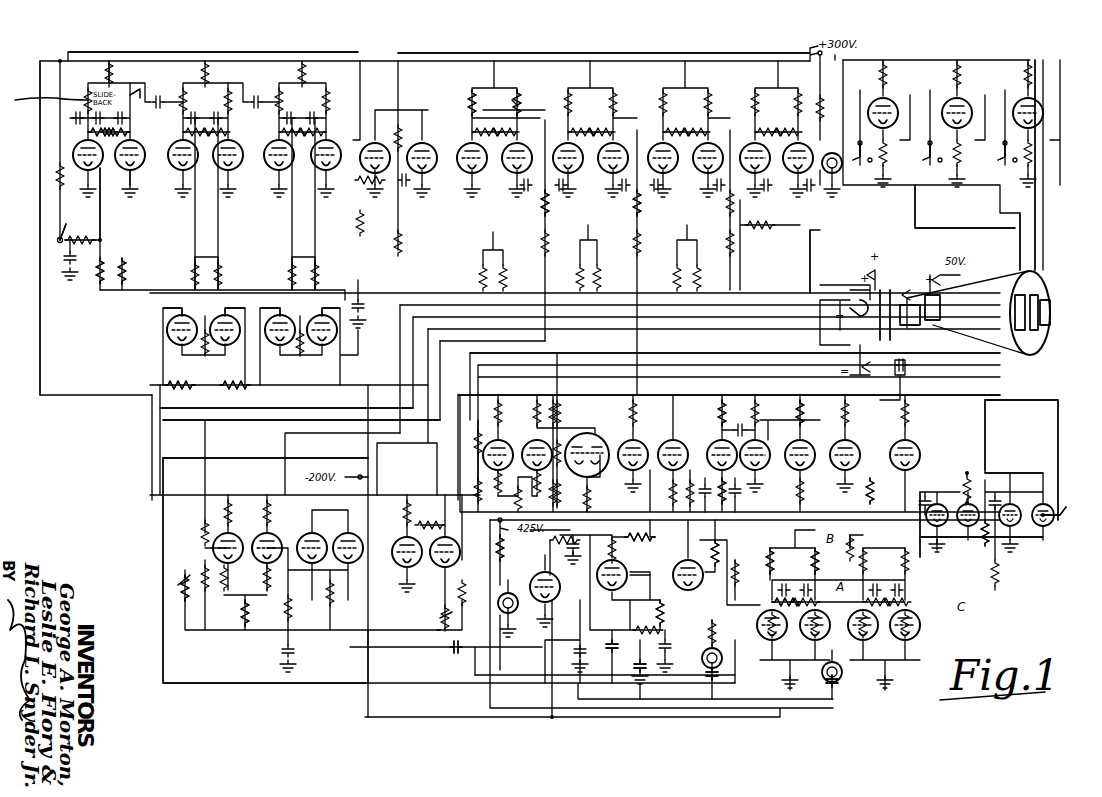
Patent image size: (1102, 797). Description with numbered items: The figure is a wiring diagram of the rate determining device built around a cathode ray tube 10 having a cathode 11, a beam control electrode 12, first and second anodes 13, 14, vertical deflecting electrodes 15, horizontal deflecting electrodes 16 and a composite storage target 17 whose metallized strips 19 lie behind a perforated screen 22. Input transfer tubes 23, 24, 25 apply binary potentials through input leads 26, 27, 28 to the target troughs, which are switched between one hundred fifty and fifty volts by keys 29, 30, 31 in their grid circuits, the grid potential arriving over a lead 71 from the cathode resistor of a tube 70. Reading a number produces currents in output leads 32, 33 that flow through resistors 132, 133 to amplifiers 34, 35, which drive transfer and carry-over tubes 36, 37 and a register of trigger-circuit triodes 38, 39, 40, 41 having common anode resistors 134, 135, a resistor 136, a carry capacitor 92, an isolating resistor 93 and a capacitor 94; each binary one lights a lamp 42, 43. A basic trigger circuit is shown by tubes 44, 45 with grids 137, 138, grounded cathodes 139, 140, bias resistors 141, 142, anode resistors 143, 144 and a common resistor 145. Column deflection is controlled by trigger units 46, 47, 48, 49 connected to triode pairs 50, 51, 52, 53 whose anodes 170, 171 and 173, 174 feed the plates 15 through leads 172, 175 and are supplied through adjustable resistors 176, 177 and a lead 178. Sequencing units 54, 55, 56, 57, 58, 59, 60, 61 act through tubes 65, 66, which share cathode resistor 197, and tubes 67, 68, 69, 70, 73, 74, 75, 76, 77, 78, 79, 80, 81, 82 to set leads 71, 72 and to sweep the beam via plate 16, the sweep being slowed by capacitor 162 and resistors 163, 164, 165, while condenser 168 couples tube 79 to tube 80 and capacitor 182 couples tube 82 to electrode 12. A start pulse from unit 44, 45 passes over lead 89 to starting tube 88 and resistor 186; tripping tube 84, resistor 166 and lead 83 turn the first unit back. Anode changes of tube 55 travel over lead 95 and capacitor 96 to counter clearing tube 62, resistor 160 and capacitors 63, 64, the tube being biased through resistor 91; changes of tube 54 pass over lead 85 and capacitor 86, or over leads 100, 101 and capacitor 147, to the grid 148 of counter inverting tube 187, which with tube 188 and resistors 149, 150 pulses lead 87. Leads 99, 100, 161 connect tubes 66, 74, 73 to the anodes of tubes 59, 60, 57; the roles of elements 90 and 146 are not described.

The cathode ray tube 10 is at (992, 342).
The cathode 11 is at (851, 303).
The beam control electrode 12 is at (850, 321).
The first anode 13 is at (889, 319).
The second anode 14 is at (897, 329).
The vertical deflecting electrodes 15 is at (910, 300).
The horizontal deflecting electrodes 16 is at (941, 300).
The composite target 17 is at (1025, 321).
The metallized strips 19 is at (1050, 313).
The screen 22 is at (1018, 320).
The input transfer tube 23 is at (1023, 102).
The input transfer tube 24 is at (953, 99).
The input transfer tube 25 is at (887, 97).
The input lead 26 is at (1048, 203).
The input lead 27 is at (990, 215).
The input lead 28 is at (915, 226).
The switch 29 is at (1013, 162).
The switch 30 is at (938, 162).
The switch 31 is at (869, 162).
The output lead 32 is at (1058, 413).
The output lead 33 is at (985, 413).
The amplifier 34 is at (1045, 496).
The amplifier 35 is at (970, 506).
The transfer tube 36 is at (1012, 550).
The carry-over tube 37 is at (940, 555).
The register triode 38 is at (920, 627).
The register triode 39 is at (857, 612).
The register triode 40 is at (815, 610).
The register triode 41 is at (765, 614).
The lamp 42 is at (825, 675).
The lamp 43 is at (717, 658).
The starting unit tube 44 is at (78, 162).
The starting unit tube 45 is at (137, 146).
The trigger circuit tube 46 is at (169, 161).
The trigger circuit tube 47 is at (215, 162).
The trigger circuit tube 48 is at (266, 162).
The trigger circuit tube 49 is at (314, 162).
The triode 50 is at (180, 344).
The triode 51 is at (226, 344).
The triode 52 is at (278, 344).
The triode 53 is at (323, 344).
The sequencing unit tube 54 is at (464, 170).
The sequencing unit tube 55 is at (508, 170).
The sequencing unit tube 56 is at (576, 171).
The sequencing unit tube 57 is at (613, 144).
The sequencing unit tube 58 is at (670, 168).
The sequencing unit tube 59 is at (708, 144).
The sequencing unit tube 60 is at (768, 170).
The sequencing unit tube 61 is at (826, 152).
The counter clearing tube 62 is at (531, 582).
The capacitor 63 is at (845, 690).
The capacitor 64 is at (723, 673).
The tube 65 is at (223, 583).
The tube 66 is at (256, 563).
The tube 67 is at (355, 533).
The tube 68 is at (317, 529).
The tube 69 is at (397, 542).
The tube 70 is at (436, 565).
The lead 71 is at (802, 262).
The lead 72 is at (498, 608).
The tube 73 is at (486, 434).
The tube 74 is at (524, 441).
The tube 75 is at (600, 440).
The tube 76 is at (630, 444).
The tube 77 is at (665, 444).
The tube 78 is at (717, 444).
The tube 79 is at (768, 440).
The tube 80 is at (798, 440).
The tube 81 is at (847, 436).
The tube 82 is at (918, 447).
The lead 83 is at (428, 56).
The tripping tube 84 is at (410, 143).
The lead 85 is at (255, 440).
The capacitor 86 is at (629, 668).
The lead 87 is at (729, 553).
The starting tube 88 is at (362, 148).
The lead 89 is at (337, 56).
The switch 90 is at (66, 220).
The resistor 91 is at (365, 653).
The capacitor 92 is at (825, 561).
The resistor 93 is at (940, 572).
The capacitor 94 is at (932, 485).
The lead 95 is at (541, 245).
The capacitor 96 is at (454, 655).
The lead 99 is at (285, 451).
The lead 100 is at (557, 386).
The connecting lead 101 is at (468, 354).
The resistor 132 is at (1062, 518).
The resistor 133 is at (985, 546).
The common anode resistor 134 is at (881, 546).
The common anode resistor 135 is at (791, 560).
The resistor 136 is at (1035, 487).
The grid 137 is at (90, 133).
The grid 138 is at (135, 136).
The cathode 139 is at (96, 176).
The cathode 140 is at (134, 175).
The resistor 141 is at (96, 279).
The resistor 142 is at (126, 274).
The resistor 143 is at (45, 98).
The resistor 144 is at (134, 92).
The resistor 145 is at (106, 79).
The resistor 146 is at (769, 591).
The capacitor 147 is at (601, 632).
The grid 148 is at (612, 588).
The resistor 149 is at (623, 545).
The resistor 150 is at (666, 609).
The resistor 160 is at (516, 548).
The lead 161 is at (640, 262).
The capacitor 162 is at (735, 413).
The resistor 163 is at (864, 500).
The resistor 164 is at (812, 500).
The resistor 165 is at (177, 620).
The resistor 166 is at (517, 98).
The condenser 168 is at (805, 413).
The anode 170 is at (179, 304).
The anode 171 is at (277, 304).
The lead 172 is at (216, 404).
The anode 173 is at (226, 304).
The anode 174 is at (322, 304).
The lead 175 is at (290, 398).
The adjustable resistor 176 is at (172, 380).
The adjustable resistor 177 is at (210, 380).
The lead 178 is at (40, 346).
The capacitor 182 is at (910, 358).
The resistor 186 is at (464, 98).
The counter inverting tube 187 is at (629, 580).
The tube 188 is at (682, 559).
The common cathode lead resistor 197 is at (255, 612).